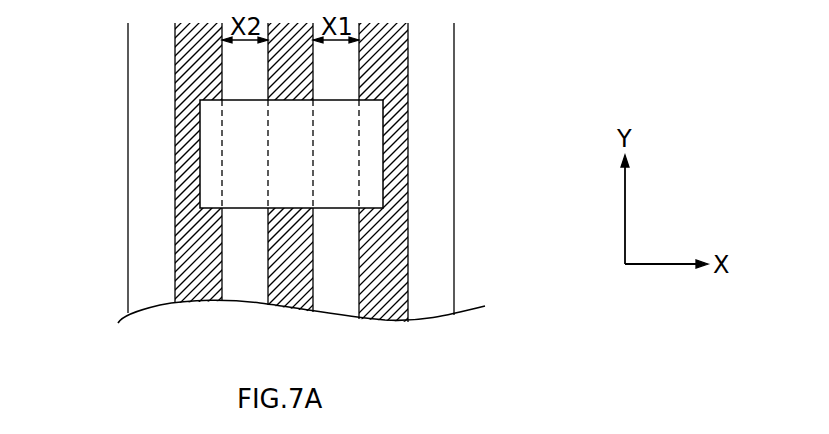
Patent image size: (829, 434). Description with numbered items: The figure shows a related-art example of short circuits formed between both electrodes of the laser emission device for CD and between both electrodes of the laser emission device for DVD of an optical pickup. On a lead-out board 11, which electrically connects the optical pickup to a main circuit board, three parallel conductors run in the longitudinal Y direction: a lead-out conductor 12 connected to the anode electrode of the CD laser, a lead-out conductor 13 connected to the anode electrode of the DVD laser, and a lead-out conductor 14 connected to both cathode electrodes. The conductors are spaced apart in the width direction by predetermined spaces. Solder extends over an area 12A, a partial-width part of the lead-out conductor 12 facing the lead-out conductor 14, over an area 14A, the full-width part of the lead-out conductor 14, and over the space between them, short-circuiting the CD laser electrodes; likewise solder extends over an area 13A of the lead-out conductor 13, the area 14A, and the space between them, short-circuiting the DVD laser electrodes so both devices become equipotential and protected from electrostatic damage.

The lead-out board 11 is at (445, 215).
The lead-out conductor 12 is at (387, 321).
The lead-out conductor 13 is at (199, 303).
The lead-out conductor 14 is at (292, 306).
The area 12A is at (378, 142).
The area 13A is at (212, 134).
The area 14A is at (288, 181).